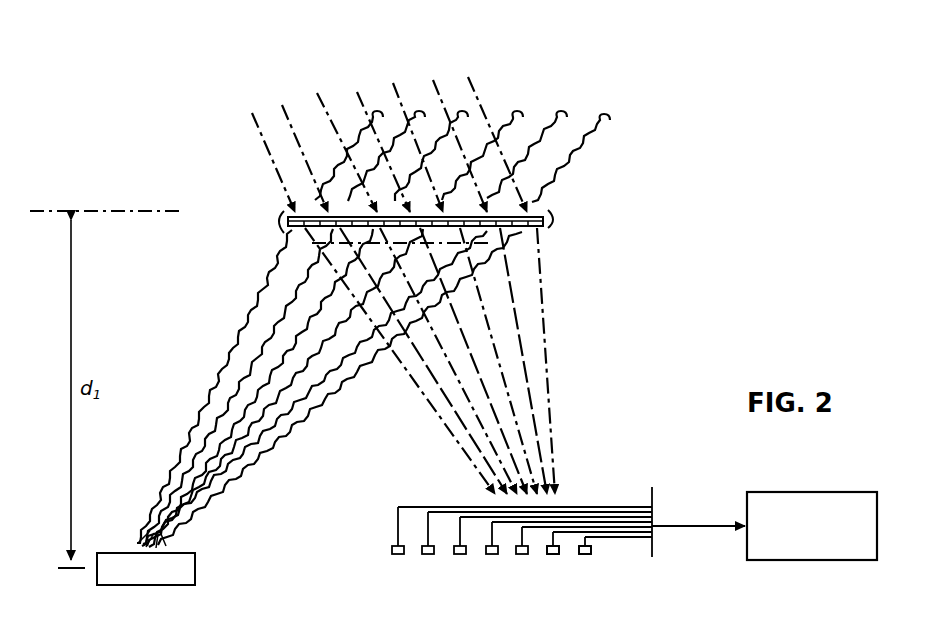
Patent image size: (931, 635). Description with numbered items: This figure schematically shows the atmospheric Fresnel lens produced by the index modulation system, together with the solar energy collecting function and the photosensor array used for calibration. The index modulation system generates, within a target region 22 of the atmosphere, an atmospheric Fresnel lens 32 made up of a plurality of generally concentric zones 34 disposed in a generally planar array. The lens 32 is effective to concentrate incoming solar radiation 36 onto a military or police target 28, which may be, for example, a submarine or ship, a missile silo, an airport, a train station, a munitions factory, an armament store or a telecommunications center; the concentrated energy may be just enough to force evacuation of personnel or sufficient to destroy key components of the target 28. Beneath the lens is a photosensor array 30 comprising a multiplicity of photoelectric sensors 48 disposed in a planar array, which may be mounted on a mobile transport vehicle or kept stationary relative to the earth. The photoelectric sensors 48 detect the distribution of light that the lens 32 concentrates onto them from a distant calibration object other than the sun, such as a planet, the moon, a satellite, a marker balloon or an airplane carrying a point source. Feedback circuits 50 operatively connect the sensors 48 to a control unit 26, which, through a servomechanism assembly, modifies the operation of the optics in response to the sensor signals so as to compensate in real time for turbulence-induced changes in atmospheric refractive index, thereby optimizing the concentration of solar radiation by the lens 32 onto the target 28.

The target region 22 is at (552, 219).
The control unit 26 is at (808, 492).
The military or police target 28 is at (195, 572).
The photosensor array 30 is at (388, 548).
The atmospheric Fresnel lens 32 is at (542, 229).
The concentric zones 34 is at (336, 234).
The incoming solar radiation 36 is at (562, 127).
The photoelectric sensors 48 is at (582, 555).
The feedback circuits 50 is at (602, 512).